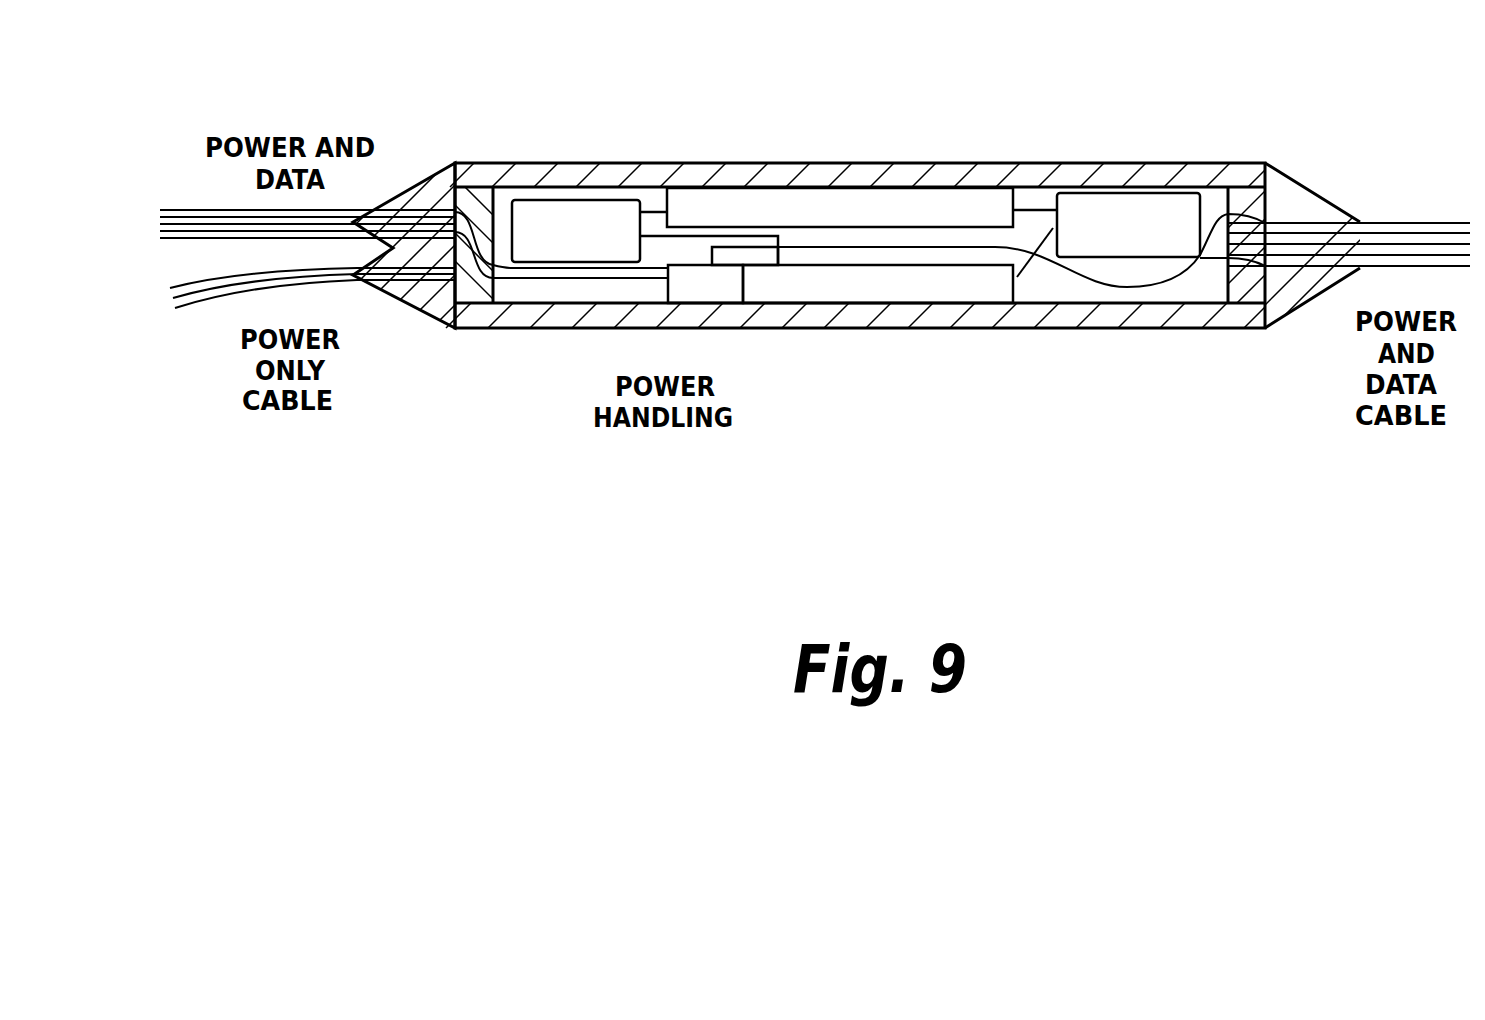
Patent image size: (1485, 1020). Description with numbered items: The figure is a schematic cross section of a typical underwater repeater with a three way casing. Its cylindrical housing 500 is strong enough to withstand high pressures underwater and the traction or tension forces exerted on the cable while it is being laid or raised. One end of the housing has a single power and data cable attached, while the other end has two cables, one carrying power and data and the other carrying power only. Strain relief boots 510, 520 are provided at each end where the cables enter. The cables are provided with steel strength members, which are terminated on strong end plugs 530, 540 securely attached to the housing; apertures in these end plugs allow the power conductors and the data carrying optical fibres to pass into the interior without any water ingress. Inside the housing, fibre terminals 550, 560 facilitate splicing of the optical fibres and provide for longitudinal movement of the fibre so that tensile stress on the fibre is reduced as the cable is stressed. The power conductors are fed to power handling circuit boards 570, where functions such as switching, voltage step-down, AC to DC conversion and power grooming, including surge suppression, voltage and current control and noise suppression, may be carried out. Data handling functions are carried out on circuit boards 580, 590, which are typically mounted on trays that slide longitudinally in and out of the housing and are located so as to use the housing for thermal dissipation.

The cylindrical housing 500 is at (1002, 178).
The strain relief boot 510 is at (433, 297).
The strain relief boot 520 is at (1300, 205).
The end plug 530 is at (483, 293).
The end plug 540 is at (1238, 297).
The fibre terminal 550 is at (622, 210).
The fibre terminal 560 is at (1120, 200).
The power handling circuit boards 570 is at (706, 288).
The circuit boards 580 is at (988, 292).
The circuit boards 590 is at (822, 190).